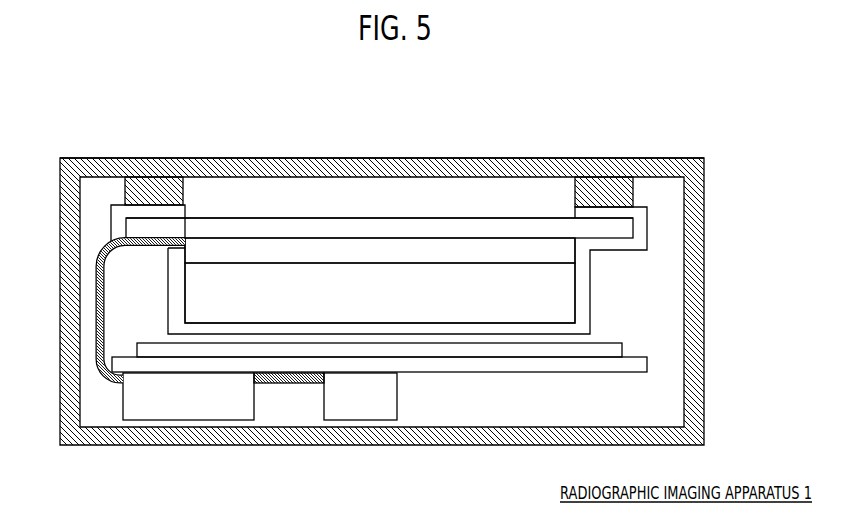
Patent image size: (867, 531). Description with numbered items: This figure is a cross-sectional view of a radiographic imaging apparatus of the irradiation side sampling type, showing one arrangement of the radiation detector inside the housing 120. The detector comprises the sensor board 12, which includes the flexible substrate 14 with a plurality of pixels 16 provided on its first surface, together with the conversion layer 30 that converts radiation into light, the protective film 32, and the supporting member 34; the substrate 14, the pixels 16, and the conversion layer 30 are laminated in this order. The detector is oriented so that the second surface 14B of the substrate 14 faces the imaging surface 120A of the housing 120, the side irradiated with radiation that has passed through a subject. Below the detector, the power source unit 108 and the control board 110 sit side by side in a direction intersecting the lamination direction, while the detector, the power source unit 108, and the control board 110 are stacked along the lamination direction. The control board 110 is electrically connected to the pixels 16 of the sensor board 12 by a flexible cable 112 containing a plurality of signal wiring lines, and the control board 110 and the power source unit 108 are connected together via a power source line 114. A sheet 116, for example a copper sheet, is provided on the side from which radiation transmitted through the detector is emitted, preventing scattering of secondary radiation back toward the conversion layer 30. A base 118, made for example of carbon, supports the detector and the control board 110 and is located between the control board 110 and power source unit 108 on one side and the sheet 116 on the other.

The sensor board 12 is at (456, 228).
The flexible substrate 14 is at (433, 212).
The second surface 14B is at (350, 218).
The pixels 16 is at (567, 257).
The conversion layer 30 is at (563, 293).
The protective film 32 is at (587, 322).
The supporting member 34 is at (159, 193).
The power source unit 108 is at (360, 402).
The control board 110 is at (198, 387).
The flexible cable 112 is at (105, 313).
The power source line 114 is at (295, 387).
The sheet 116 is at (475, 352).
The base 118 is at (567, 362).
The housing 120 is at (382, 280).
The imaging surface 120A is at (408, 158).